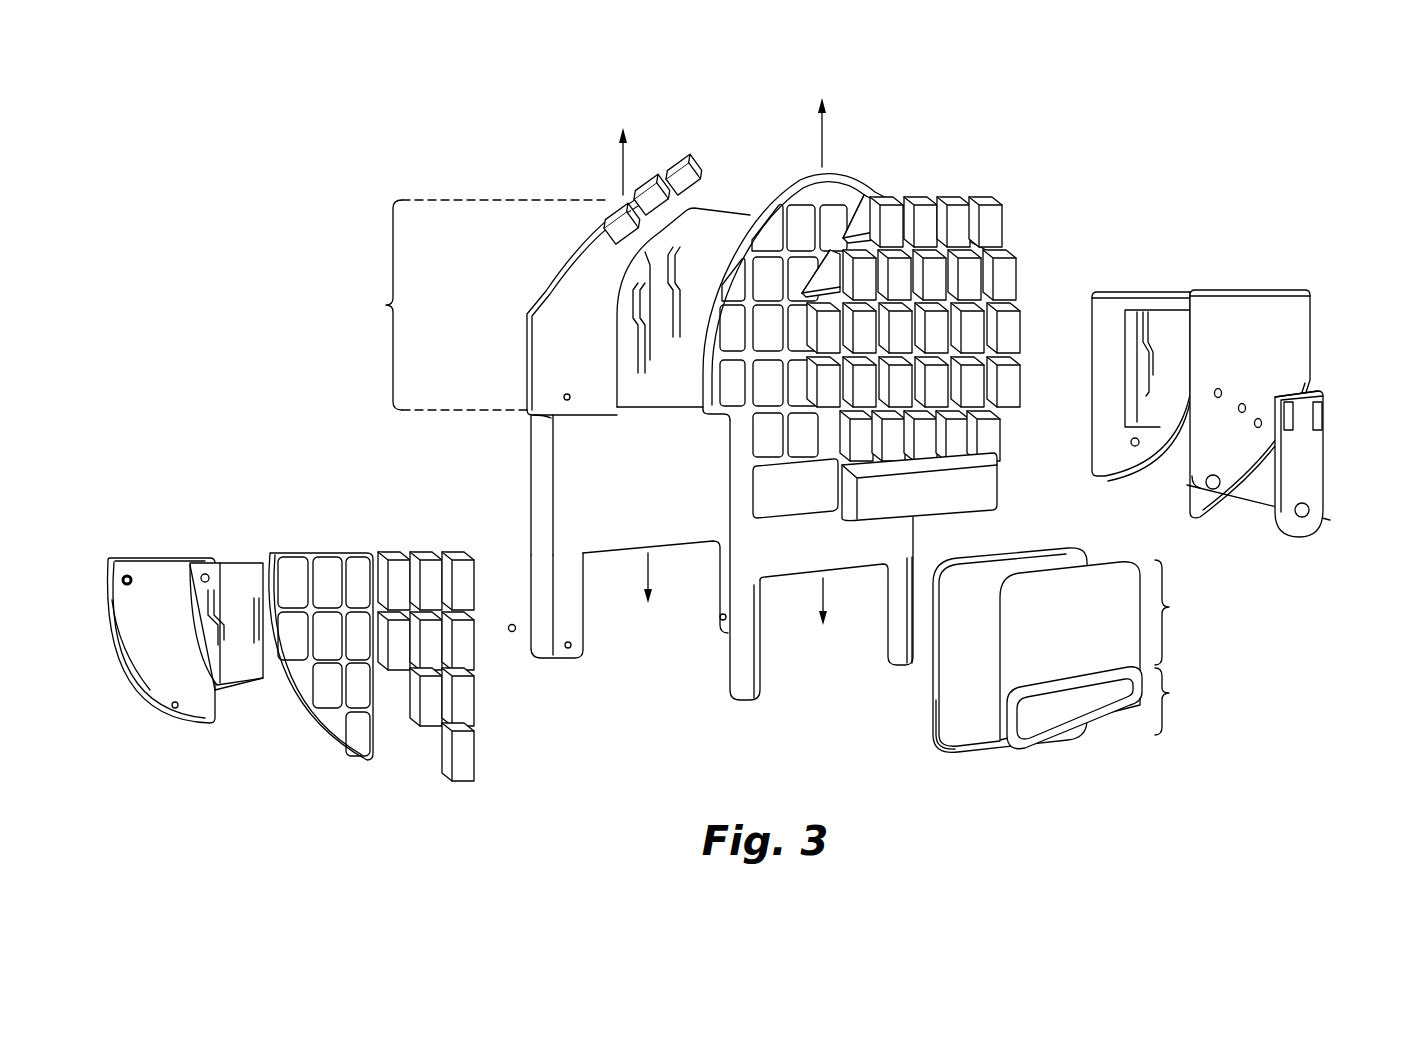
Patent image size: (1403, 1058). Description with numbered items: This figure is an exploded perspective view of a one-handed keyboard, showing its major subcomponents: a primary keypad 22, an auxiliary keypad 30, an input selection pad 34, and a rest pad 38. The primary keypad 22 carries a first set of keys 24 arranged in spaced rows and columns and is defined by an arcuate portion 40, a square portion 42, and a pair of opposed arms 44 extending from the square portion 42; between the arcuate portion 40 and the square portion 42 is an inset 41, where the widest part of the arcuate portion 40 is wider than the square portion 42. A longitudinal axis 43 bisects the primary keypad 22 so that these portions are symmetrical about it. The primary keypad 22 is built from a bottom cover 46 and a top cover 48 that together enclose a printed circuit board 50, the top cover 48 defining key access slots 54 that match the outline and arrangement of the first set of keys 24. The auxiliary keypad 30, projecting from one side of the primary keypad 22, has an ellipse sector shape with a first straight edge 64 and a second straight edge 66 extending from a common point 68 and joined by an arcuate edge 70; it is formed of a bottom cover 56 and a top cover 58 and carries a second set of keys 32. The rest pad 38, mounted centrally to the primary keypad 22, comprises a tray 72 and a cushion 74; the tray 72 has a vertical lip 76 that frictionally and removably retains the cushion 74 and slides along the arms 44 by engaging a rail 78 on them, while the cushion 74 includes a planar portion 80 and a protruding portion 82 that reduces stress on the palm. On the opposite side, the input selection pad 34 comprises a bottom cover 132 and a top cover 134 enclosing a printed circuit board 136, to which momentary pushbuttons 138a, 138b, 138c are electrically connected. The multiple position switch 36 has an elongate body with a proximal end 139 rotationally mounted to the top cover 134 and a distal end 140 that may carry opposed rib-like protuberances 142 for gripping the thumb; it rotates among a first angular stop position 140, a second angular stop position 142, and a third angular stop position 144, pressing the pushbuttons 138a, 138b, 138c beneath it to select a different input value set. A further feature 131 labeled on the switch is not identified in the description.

The primary keypad 22 is at (745, 420).
The first set of keys 24 is at (990, 236).
The auxiliary keypad 30 is at (279, 618).
The second set of keys 32 is at (413, 522).
The input selection pad 34 is at (1236, 379).
The multiple position switch 36 is at (1322, 400).
The rest pad 38 is at (1032, 685).
The arcuate portion 40 is at (470, 305).
The inset 41 is at (527, 420).
The square portion 42 is at (528, 420).
The longitudinal axis 43 is at (621, 168).
The pair of opposed arms 44 is at (528, 560).
The bottom cover 46 is at (845, 188).
The top cover 48 is at (543, 343).
The printed circuit board 50 is at (723, 218).
The key access slots 54 is at (798, 215).
The bottom cover 56 is at (160, 686).
The top cover 58 is at (330, 736).
The first straight edge 64 is at (150, 556).
The second straight edge 66 is at (246, 565).
The common point 68 is at (205, 566).
The arcuate edge 70 is at (128, 664).
The tray 72 is at (948, 703).
The cushion 74 is at (1030, 752).
The vertical lip 76 is at (940, 740).
The rail 78 is at (755, 700).
The planar portion 80 is at (1099, 650).
The protruding portion 82 is at (513, 632).
The hole 131 is at (1312, 510).
The bottom cover 132 is at (1108, 306).
The top cover 134 is at (1233, 303).
The printed circuit board 136 is at (1163, 318).
The momentary pushbutton 138a is at (1190, 466).
The momentary pushbutton 138b is at (1220, 405).
The momentary pushbutton 138c is at (1260, 432).
The proximal end 139 is at (1330, 390).
The first angular stop position 140 is at (1235, 378).
The second angular stop position 142 is at (1258, 390).
The third angular stop position 144 is at (606, 216).